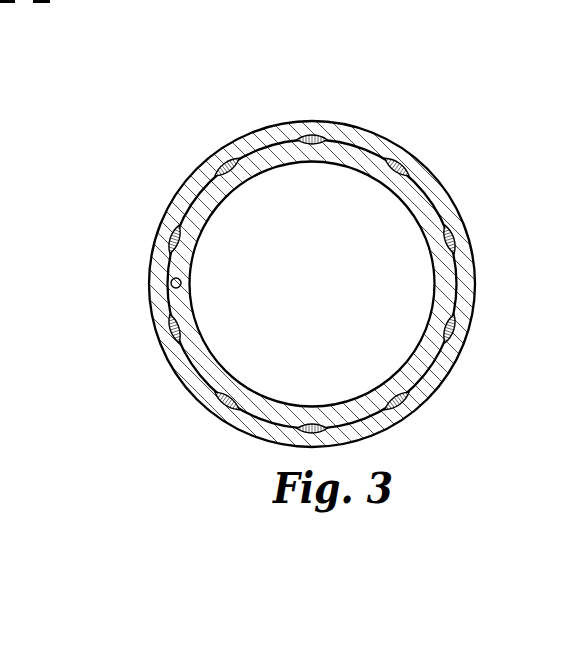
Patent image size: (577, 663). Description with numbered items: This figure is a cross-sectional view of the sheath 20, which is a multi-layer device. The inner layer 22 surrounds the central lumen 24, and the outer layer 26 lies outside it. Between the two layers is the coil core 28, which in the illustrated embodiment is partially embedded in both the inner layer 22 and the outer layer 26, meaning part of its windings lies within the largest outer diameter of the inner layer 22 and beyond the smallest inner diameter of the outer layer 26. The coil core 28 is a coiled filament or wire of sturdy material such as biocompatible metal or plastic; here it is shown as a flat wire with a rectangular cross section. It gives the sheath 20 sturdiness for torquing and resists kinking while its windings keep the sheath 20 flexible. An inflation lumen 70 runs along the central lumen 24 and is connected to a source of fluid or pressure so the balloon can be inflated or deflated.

The sheath 20 is at (370, 114).
The inner layer 22 is at (450, 287).
The central lumen 24 is at (372, 341).
The outer layer 26 is at (443, 192).
The coil core 28 is at (311, 135).
The inflation lumen 70 is at (171, 285).